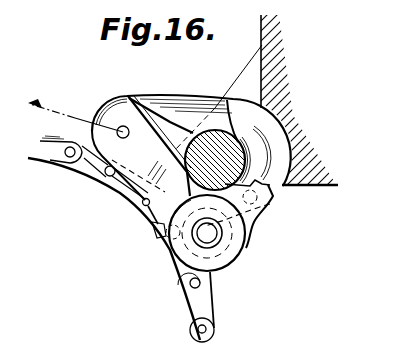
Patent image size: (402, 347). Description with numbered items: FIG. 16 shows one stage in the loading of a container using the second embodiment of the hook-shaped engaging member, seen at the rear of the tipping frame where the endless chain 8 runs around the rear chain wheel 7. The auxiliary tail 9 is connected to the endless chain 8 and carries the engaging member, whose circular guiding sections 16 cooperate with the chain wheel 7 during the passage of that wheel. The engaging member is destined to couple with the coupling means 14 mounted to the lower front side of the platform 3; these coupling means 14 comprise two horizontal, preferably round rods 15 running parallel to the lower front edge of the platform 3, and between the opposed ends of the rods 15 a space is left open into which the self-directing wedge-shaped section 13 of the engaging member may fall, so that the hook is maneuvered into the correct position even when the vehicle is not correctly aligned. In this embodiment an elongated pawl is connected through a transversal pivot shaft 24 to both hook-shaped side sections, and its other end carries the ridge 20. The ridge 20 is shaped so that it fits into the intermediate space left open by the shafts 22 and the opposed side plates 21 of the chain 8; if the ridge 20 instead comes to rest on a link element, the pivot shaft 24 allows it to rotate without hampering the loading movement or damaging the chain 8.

The platform 3 is at (266, 45).
The chain wheel 7 is at (183, 300).
The endless chain 8 is at (216, 330).
The auxiliary tail 9 is at (74, 114).
The wedge-shaped section 13 is at (158, 98).
The coupling means 14 is at (231, 91).
The rods 15 is at (190, 99).
The circular guiding sections 16 is at (229, 240).
The ridge 20 is at (146, 233).
The side plates 21 is at (54, 167).
The shafts 22 is at (190, 330).
The transversal pivot shaft 24 is at (272, 204).